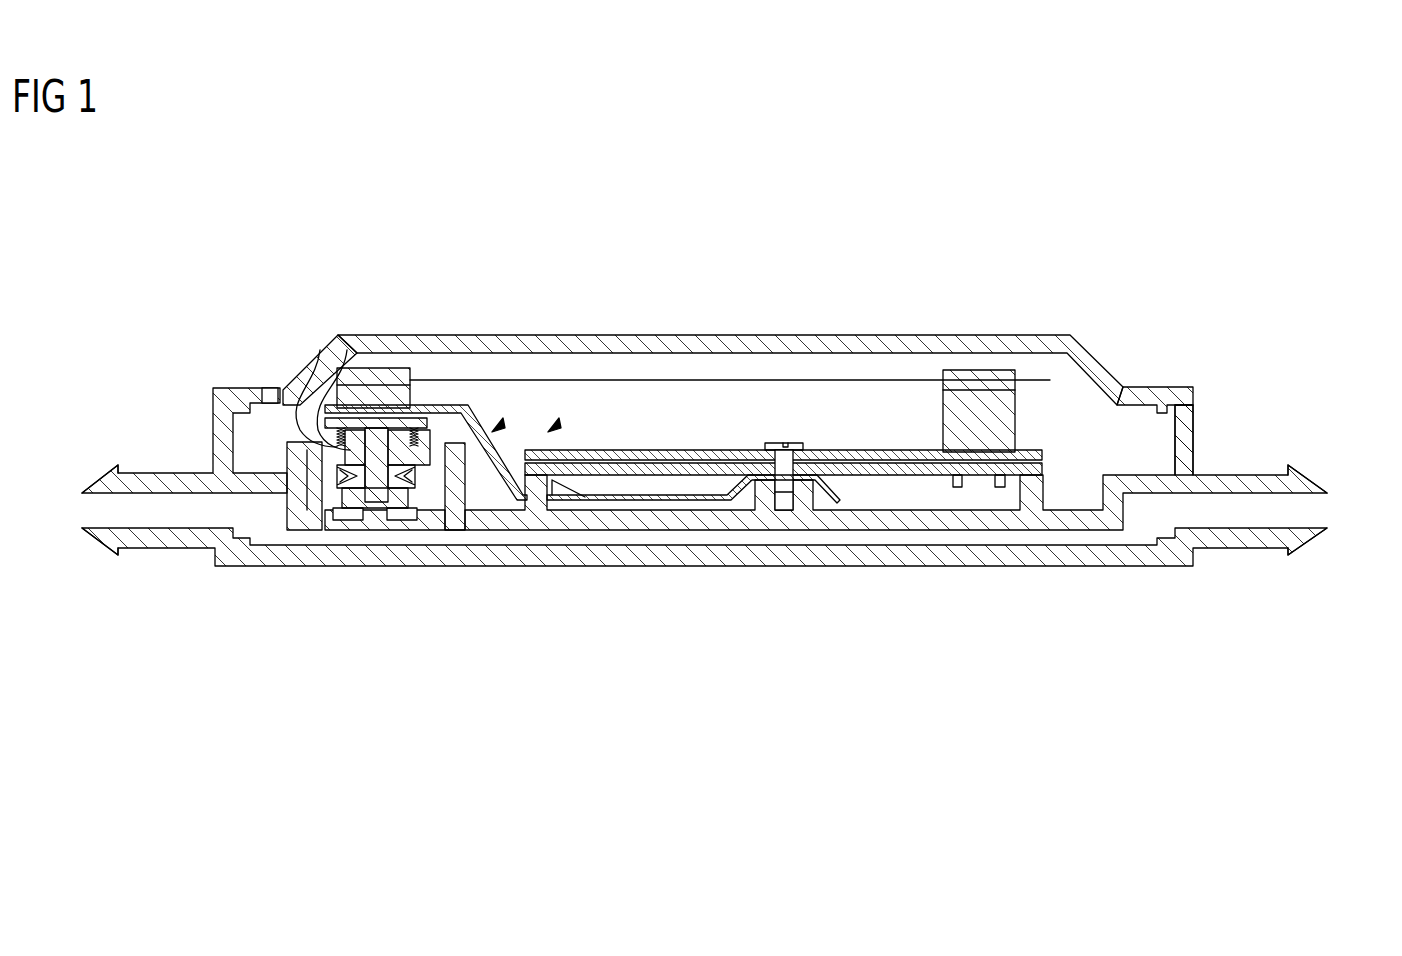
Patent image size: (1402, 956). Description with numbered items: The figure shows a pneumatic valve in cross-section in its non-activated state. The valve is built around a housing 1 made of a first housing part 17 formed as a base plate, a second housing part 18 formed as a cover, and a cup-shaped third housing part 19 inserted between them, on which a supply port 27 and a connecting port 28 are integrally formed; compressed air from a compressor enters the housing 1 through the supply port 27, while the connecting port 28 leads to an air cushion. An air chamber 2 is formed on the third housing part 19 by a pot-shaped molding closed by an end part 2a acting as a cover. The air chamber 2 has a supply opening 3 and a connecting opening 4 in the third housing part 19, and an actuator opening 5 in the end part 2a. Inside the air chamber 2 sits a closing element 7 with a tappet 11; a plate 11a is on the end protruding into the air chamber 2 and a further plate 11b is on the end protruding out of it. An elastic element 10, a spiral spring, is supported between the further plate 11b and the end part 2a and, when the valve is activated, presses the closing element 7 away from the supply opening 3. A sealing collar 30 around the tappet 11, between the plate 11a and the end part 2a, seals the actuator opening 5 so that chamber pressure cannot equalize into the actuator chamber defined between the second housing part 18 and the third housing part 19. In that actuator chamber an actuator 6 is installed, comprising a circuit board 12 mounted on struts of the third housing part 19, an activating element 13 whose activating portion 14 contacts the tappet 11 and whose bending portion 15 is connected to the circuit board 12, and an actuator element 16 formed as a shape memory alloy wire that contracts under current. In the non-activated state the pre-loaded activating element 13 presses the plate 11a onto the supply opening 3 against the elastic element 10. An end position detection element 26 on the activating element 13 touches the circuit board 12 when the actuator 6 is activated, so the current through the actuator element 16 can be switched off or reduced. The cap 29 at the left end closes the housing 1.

The housing 1 is at (1212, 244).
The air chamber 2 is at (413, 500).
The end part 2a is at (436, 487).
The supply opening 3 is at (373, 522).
The connecting opening 4 is at (328, 522).
The actuator opening 5 is at (292, 387).
The actuator 6 is at (553, 423).
The closing element 7 is at (373, 448).
The elastic element 10 is at (320, 350).
The tappet 11 is at (362, 500).
The plate 11a is at (393, 498).
The further plate 11b is at (347, 350).
The circuit board 12 is at (880, 468).
The activating element 13 is at (497, 423).
The activating portion 14 is at (446, 404).
The bending portion 15 is at (713, 501).
The actuator element 16 is at (820, 373).
The first housing part 17 is at (1153, 562).
The second housing part 18 is at (1163, 395).
The third housing part 19 is at (1185, 430).
The end position detection element 26 is at (566, 498).
The supply port 27 is at (1300, 505).
The connecting port 28 is at (105, 503).
The connector cap 29 is at (270, 395).
The sealing collar 30 is at (340, 472).